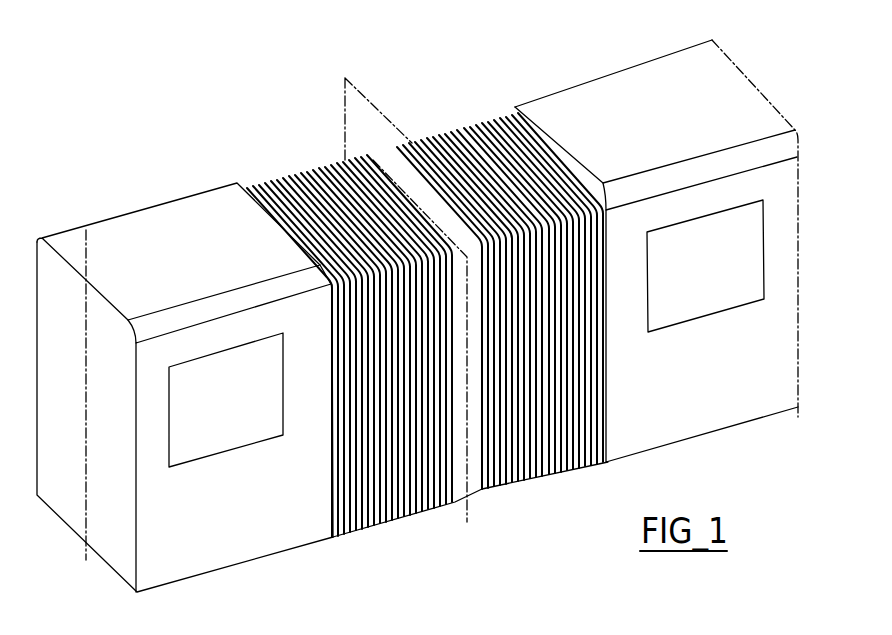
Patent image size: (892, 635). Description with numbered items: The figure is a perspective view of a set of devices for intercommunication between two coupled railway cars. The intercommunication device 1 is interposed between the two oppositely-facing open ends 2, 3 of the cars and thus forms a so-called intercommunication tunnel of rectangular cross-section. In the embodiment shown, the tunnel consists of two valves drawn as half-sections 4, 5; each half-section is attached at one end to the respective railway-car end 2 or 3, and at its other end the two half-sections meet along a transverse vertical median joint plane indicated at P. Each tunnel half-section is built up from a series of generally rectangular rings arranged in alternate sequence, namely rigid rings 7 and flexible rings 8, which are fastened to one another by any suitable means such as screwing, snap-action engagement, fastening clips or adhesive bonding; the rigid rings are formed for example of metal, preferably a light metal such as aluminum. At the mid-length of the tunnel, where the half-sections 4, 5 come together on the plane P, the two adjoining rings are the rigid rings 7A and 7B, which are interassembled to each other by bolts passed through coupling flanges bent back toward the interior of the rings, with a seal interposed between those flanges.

The intercommunication device 1 is at (423, 127).
The railway-car end 2 is at (142, 208).
The railway-car end 3 is at (593, 80).
The half-section 4 is at (459, 515).
The half-section 5 is at (608, 474).
The rigid ring 7 is at (280, 183).
The flexible ring 8 is at (320, 172).
The rigid ring 7A is at (457, 497).
The rigid ring 7B is at (483, 490).
The joint plane P is at (406, 300).